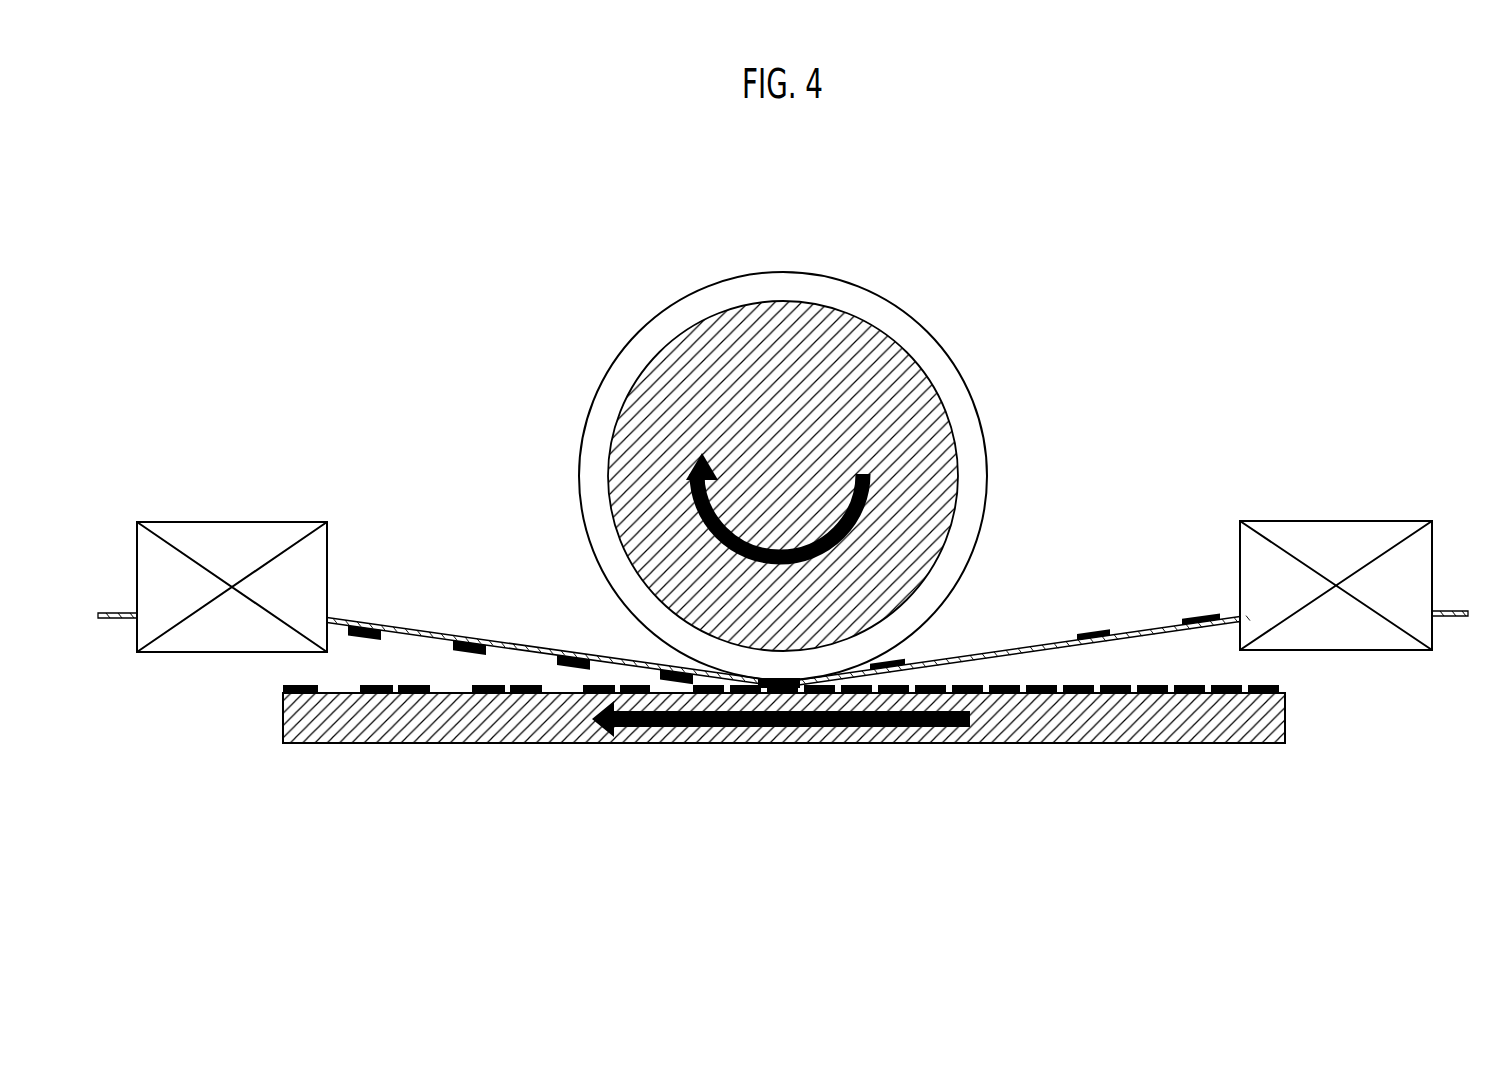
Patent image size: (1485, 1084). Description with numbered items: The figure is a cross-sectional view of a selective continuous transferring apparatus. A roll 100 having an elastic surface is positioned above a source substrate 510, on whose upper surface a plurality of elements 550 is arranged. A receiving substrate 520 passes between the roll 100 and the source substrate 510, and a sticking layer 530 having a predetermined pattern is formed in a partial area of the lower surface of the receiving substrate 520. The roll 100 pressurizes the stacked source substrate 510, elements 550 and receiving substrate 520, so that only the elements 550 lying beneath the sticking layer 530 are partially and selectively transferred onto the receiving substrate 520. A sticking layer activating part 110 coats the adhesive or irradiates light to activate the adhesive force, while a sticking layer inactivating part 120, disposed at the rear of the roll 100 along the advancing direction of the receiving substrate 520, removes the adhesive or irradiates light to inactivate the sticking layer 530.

The roll 100 is at (688, 355).
The sticking layer activating part 110 is at (1333, 521).
The sticking layer inactivating part 120 is at (229, 521).
The source substrate 510 is at (338, 727).
The receiving substrate 520 is at (405, 622).
The sticking layer 530 is at (573, 650).
The elements 550 is at (1140, 695).